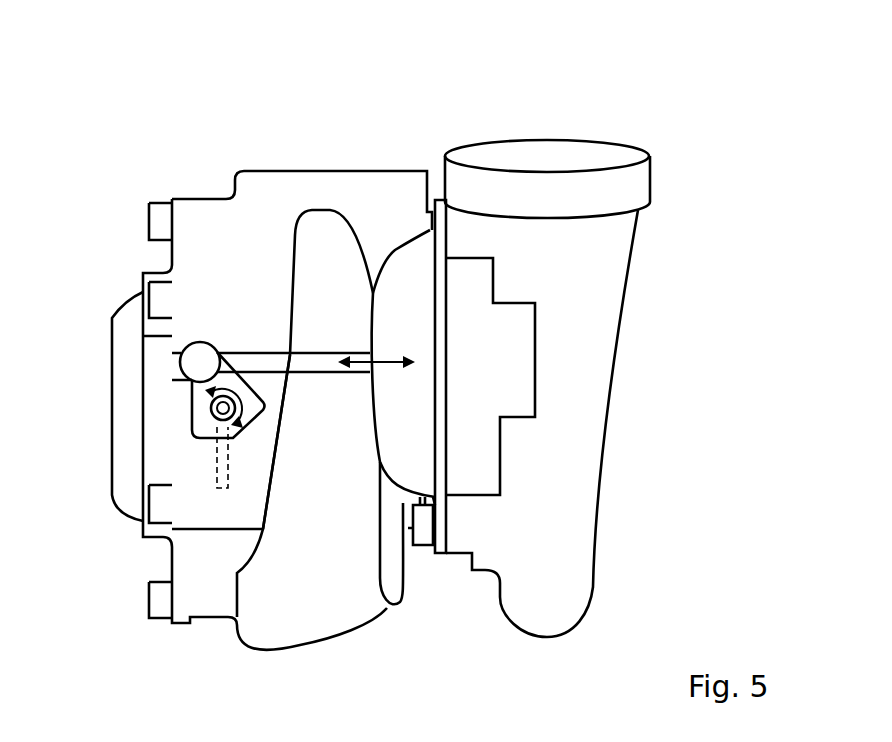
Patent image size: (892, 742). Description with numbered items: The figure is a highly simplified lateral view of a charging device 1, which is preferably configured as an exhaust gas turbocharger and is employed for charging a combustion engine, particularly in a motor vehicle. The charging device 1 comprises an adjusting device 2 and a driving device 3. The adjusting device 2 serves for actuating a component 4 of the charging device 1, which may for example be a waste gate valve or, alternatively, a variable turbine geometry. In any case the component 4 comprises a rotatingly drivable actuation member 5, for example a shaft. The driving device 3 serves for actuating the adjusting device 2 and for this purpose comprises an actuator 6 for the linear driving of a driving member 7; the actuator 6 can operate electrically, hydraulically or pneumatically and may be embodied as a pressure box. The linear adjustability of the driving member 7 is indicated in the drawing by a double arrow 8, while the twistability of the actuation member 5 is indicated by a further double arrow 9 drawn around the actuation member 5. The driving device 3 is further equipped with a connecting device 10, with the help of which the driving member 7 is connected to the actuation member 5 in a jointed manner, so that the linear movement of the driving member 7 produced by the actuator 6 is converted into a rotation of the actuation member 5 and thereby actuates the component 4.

The charging device 1 is at (702, 164).
The adjusting device 2 is at (203, 410).
The driving device 3 is at (393, 487).
The component 4 is at (209, 455).
The actuation member 5 is at (207, 397).
The actuator 6 is at (423, 428).
The driving member 7 is at (308, 362).
The double arrow 8 is at (385, 356).
The double arrow 9 is at (246, 384).
The connecting device 10 is at (204, 332).